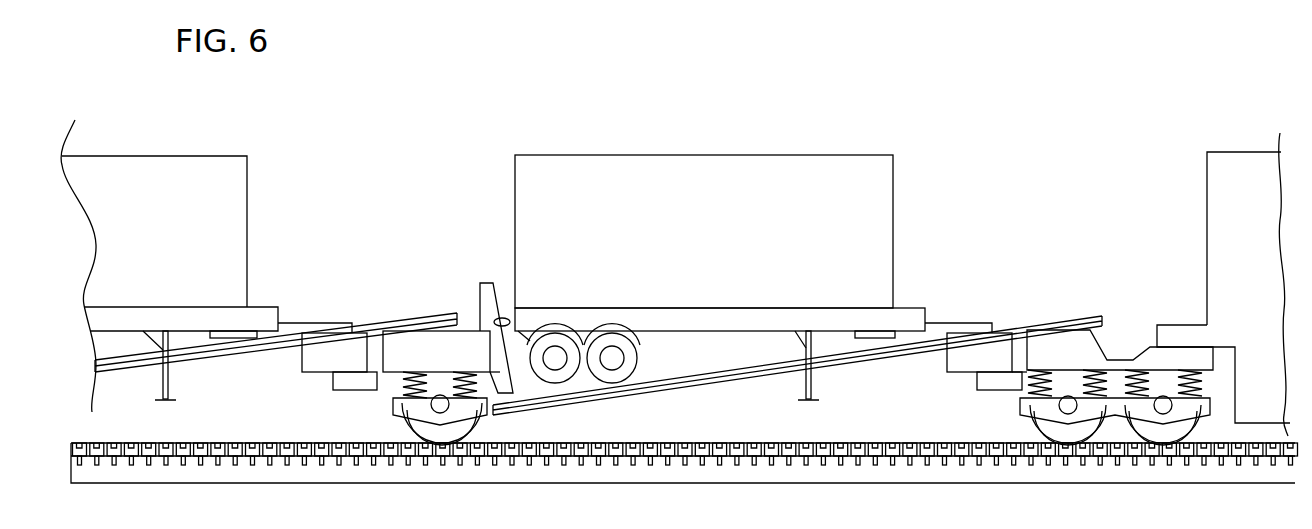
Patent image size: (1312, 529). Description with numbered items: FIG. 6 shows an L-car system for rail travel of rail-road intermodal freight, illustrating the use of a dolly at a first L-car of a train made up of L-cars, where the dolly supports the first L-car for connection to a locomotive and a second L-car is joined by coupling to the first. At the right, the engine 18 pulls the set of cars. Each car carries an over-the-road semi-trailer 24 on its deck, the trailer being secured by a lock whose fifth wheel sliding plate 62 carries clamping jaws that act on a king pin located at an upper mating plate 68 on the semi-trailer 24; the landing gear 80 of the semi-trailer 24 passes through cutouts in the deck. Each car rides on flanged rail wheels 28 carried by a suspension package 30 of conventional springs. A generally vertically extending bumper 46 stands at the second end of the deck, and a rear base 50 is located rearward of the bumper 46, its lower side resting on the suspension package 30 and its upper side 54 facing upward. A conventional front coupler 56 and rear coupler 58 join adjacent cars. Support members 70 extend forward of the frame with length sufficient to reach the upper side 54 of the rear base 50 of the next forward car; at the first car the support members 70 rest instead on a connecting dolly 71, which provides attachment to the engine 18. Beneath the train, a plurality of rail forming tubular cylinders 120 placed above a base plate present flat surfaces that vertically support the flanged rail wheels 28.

The engine 18 is at (1232, 250).
The semi-trailer 24 is at (248, 191).
The flanged rail wheel 28 is at (472, 430).
The suspension package 30 is at (483, 387).
The bumper 46 is at (490, 290).
The rear base 50 is at (380, 352).
The upper side 54 is at (468, 318).
The front coupler 56 is at (348, 390).
The rear coupler 58 is at (388, 388).
The fifth wheel sliding plate 62 is at (222, 344).
The upper mating plate 68 is at (232, 331).
The support member 70 is at (1070, 318).
The connecting dolly 71 is at (1103, 346).
The landing gear 80 is at (168, 385).
The rail forming tubular cylinder 120 is at (716, 440).